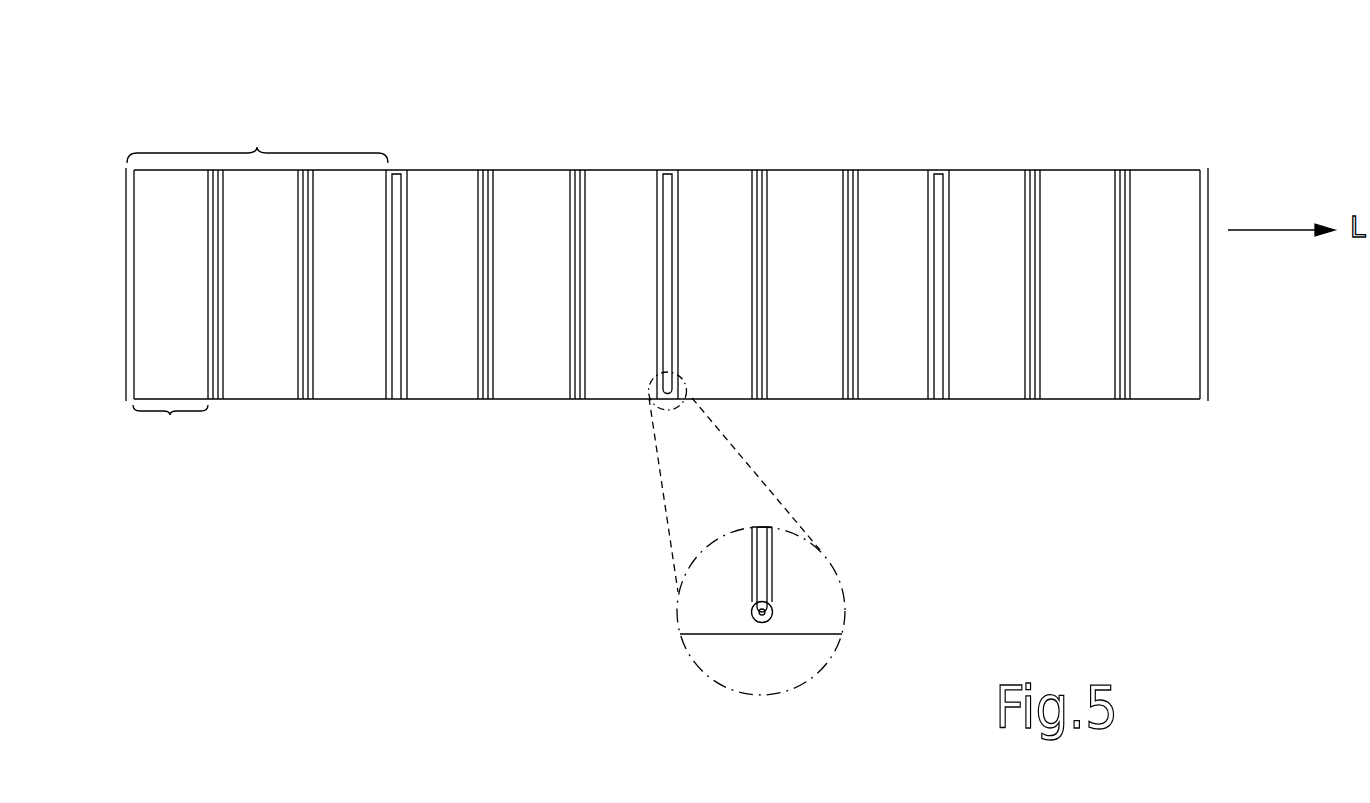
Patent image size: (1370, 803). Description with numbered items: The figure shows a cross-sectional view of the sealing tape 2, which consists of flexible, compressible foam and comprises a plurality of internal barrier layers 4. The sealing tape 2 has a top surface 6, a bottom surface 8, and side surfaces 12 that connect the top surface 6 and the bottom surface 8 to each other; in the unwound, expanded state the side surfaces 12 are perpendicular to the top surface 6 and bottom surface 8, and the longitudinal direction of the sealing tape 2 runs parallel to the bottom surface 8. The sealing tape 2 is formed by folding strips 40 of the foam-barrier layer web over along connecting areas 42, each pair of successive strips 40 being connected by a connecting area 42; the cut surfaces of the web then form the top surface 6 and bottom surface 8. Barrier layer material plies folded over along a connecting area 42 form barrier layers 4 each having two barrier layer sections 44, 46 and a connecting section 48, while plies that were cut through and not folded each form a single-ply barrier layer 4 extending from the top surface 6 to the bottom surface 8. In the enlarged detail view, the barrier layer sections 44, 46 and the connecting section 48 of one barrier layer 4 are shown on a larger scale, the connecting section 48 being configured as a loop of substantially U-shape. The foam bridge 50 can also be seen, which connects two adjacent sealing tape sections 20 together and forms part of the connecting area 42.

The sealing tape 2 is at (1250, 95).
The barrier layer 4 is at (575, 203).
The top surface 6 is at (1087, 168).
The bottom surface 8 is at (1077, 400).
The side surface 12 is at (798, 333).
The sealing tape section 20 is at (170, 428).
The strip 40 is at (257, 140).
The connecting area 42 is at (667, 405).
The barrier layer section 44 is at (663, 230).
The barrier layer section 46 is at (673, 218).
The connecting section 48 is at (752, 615).
The foam bridge 50 is at (398, 168).